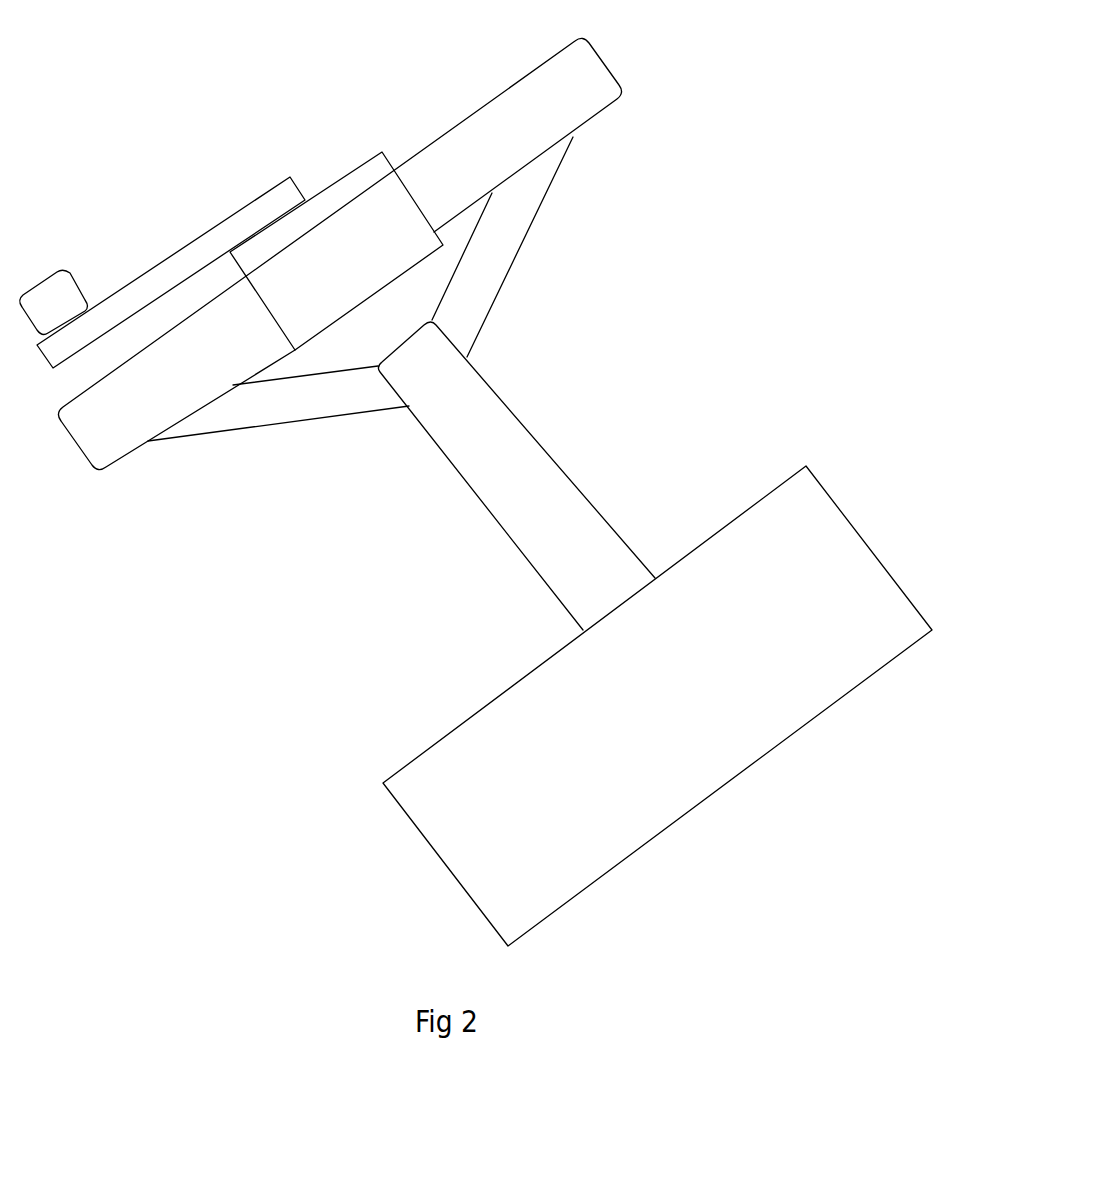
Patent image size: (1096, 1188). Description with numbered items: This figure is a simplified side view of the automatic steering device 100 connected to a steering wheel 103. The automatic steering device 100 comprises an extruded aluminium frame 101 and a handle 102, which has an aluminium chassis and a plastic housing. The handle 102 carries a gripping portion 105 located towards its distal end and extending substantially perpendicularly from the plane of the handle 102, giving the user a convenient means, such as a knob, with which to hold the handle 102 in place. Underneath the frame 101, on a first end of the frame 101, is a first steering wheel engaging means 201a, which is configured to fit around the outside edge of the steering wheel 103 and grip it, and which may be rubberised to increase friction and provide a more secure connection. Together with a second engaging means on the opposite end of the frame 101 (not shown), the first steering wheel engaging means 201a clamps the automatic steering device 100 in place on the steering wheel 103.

The automatic steering device 100 is at (381, 253).
The frame 101 is at (336, 200).
The handle 102 is at (171, 264).
The steering wheel 103 is at (400, 253).
The gripping portion 105 is at (54, 246).
The first steering wheel engaging means 201a is at (496, 247).